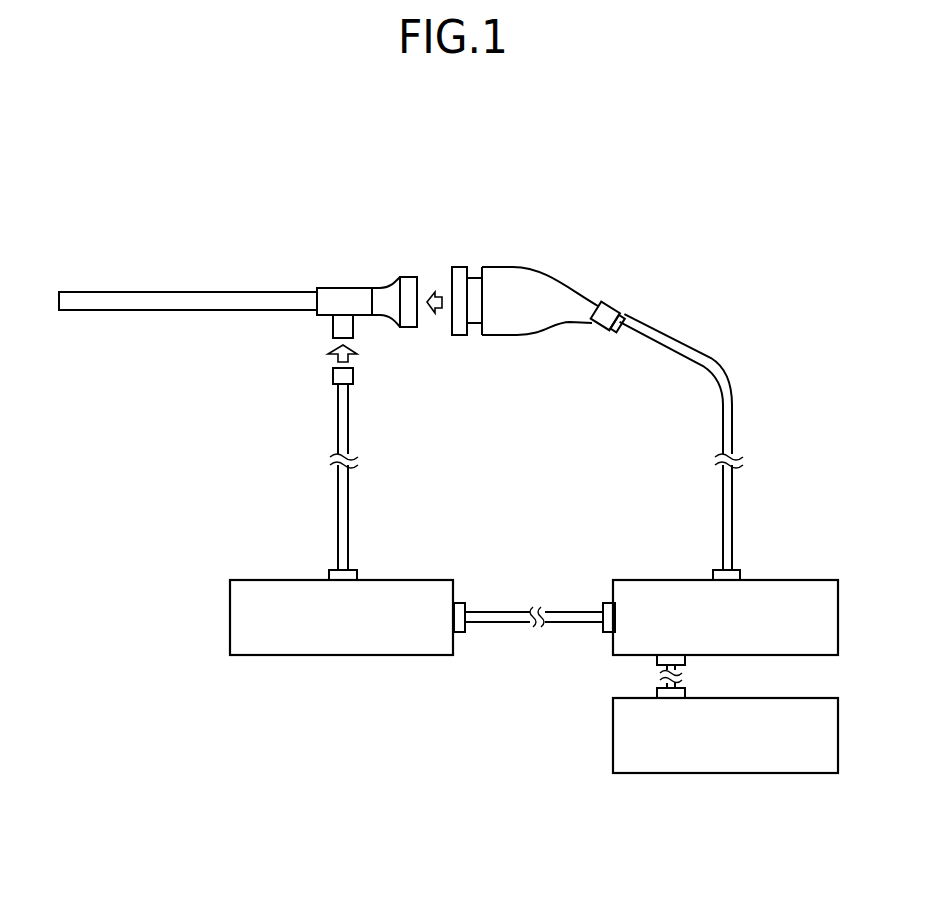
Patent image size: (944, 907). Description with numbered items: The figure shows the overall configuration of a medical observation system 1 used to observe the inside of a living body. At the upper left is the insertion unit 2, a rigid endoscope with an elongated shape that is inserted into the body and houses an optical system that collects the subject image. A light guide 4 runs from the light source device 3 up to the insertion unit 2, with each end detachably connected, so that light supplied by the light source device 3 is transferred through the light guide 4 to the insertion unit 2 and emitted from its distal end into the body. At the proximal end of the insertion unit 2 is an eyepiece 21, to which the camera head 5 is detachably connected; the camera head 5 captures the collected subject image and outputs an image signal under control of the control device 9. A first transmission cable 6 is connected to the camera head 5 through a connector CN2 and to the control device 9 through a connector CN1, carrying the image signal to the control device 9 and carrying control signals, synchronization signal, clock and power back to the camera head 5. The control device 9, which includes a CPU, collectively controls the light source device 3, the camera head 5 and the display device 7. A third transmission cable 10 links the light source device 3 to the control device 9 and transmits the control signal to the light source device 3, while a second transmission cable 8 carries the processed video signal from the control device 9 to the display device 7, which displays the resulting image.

The medical observation system 1 is at (691, 202).
The insertion unit 2 is at (265, 302).
The eyepiece 21 is at (408, 285).
The camera head 5 is at (501, 288).
The connector CN2 is at (612, 326).
The first transmission cable 6 is at (732, 420).
The connector CN1 is at (735, 567).
The control device 9 is at (788, 579).
The third transmission cable 10 is at (575, 607).
The light source device 3 is at (397, 579).
The light guide 4 is at (338, 521).
The second transmission cable 8 is at (658, 685).
The display device 7 is at (791, 697).